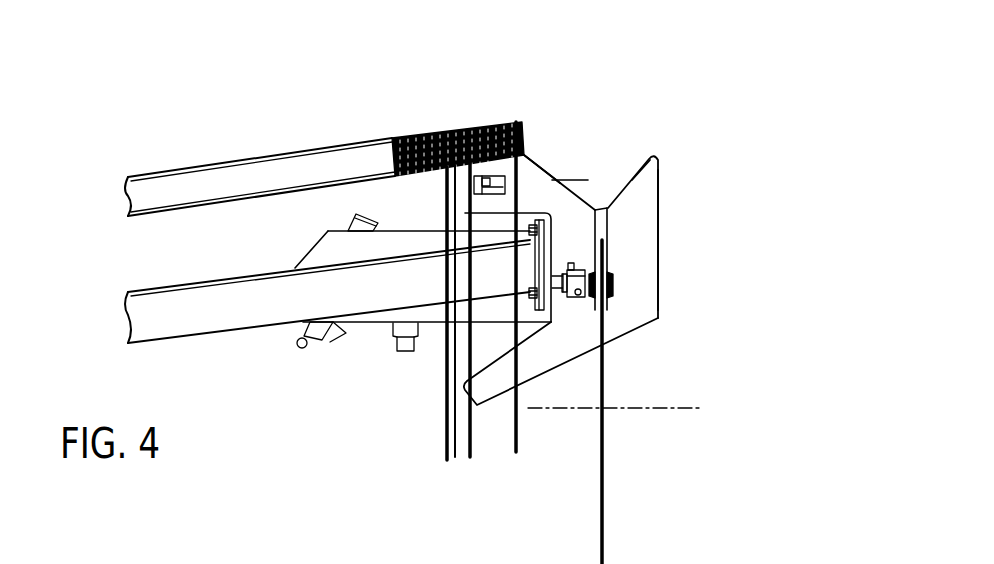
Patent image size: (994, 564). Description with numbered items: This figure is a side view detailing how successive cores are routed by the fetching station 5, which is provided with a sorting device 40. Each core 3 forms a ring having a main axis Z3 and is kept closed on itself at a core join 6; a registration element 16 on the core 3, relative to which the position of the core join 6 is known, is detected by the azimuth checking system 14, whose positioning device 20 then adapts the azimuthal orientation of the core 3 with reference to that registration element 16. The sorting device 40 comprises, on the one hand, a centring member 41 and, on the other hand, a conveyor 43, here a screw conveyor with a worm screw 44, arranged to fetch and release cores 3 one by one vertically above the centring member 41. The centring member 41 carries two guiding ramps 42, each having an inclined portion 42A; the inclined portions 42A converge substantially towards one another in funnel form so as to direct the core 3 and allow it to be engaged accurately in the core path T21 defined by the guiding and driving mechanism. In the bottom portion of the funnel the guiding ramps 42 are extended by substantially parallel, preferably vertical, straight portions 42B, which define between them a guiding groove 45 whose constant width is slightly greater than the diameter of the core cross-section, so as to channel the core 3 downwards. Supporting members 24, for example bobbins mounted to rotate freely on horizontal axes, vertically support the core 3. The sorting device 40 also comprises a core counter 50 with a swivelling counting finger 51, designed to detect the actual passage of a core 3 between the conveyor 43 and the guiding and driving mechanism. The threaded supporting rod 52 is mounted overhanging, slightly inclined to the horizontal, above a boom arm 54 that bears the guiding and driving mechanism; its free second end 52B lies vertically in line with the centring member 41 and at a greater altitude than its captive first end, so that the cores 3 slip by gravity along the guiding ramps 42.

The core 3 is at (445, 436).
The fetching station 5 is at (128, 105).
The core join 6 is at (423, 270).
The registration element 16 is at (447, 218).
The azimuth checking system 14 is at (792, 196).
The positioning device 20 is at (706, 241).
The supporting member 24 is at (612, 290).
The sorting device 40 is at (540, 104).
The centring member 41 is at (643, 202).
The guiding ramp 42 is at (545, 149).
The inclined portion 42A is at (591, 205).
The straight portion 42B is at (581, 268).
The conveyor 43 is at (270, 104).
The worm screw 44 is at (405, 145).
The guiding groove 45 is at (620, 271).
The core counter 50 is at (487, 180).
The counting finger 51 is at (564, 180).
The supporting rod 52 is at (220, 175).
The free second end 52B is at (515, 104).
The boom arm 54 is at (206, 318).
The core path T21 is at (604, 218).
The main axis Z3 is at (677, 410).